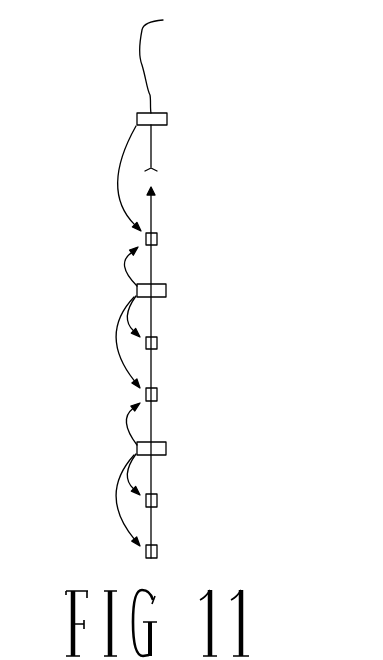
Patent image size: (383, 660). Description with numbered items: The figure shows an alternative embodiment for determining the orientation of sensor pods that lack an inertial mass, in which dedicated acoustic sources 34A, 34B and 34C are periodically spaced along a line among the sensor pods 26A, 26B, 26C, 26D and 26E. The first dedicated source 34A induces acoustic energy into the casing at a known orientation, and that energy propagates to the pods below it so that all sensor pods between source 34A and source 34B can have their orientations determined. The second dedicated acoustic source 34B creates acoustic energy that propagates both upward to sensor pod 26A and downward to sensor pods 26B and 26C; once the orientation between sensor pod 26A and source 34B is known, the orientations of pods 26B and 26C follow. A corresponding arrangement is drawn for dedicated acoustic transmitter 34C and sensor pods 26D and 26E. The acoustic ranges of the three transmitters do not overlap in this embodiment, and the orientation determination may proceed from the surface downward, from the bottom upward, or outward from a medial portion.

The dedicated acoustic source 34A is at (158, 111).
The sensor pod 26A is at (146, 237).
The dedicated acoustic source 34B is at (151, 290).
The sensor pod 26B is at (146, 341).
The sensor pod 26C is at (146, 393).
The dedicated acoustic transmitter 34C is at (151, 448).
The sensor pod 26D is at (146, 499).
The sensor pod 26E is at (146, 551).